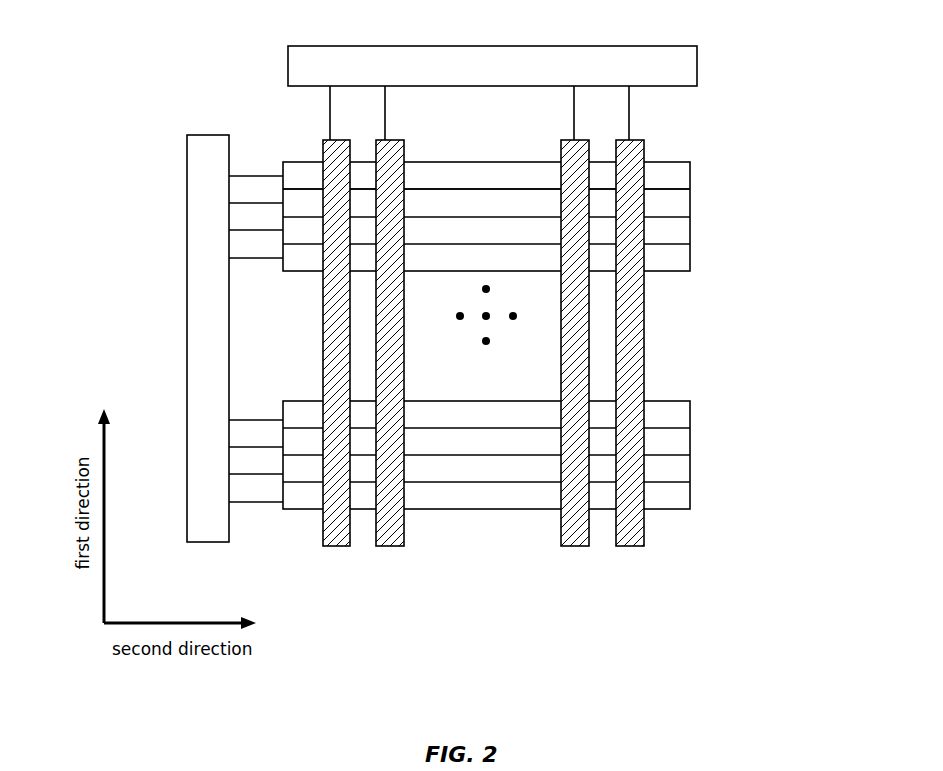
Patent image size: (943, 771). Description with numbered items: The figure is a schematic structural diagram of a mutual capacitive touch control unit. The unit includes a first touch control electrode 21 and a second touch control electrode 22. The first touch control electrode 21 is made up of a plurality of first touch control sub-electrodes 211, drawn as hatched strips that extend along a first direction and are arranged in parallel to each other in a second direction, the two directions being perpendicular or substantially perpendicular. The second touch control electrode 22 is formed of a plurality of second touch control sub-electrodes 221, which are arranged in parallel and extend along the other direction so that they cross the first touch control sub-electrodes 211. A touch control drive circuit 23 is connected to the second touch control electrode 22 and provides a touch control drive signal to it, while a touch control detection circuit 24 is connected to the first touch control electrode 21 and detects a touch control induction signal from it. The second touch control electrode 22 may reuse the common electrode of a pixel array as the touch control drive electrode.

The first touch control electrode 21 is at (332, 552).
The first touch control sub-electrode 211 is at (390, 513).
The second touch control electrode 22 is at (699, 207).
The second touch control sub-electrode 221 is at (675, 208).
The touch control drive circuit 23 is at (209, 155).
The touch control detection circuit 24 is at (440, 57).